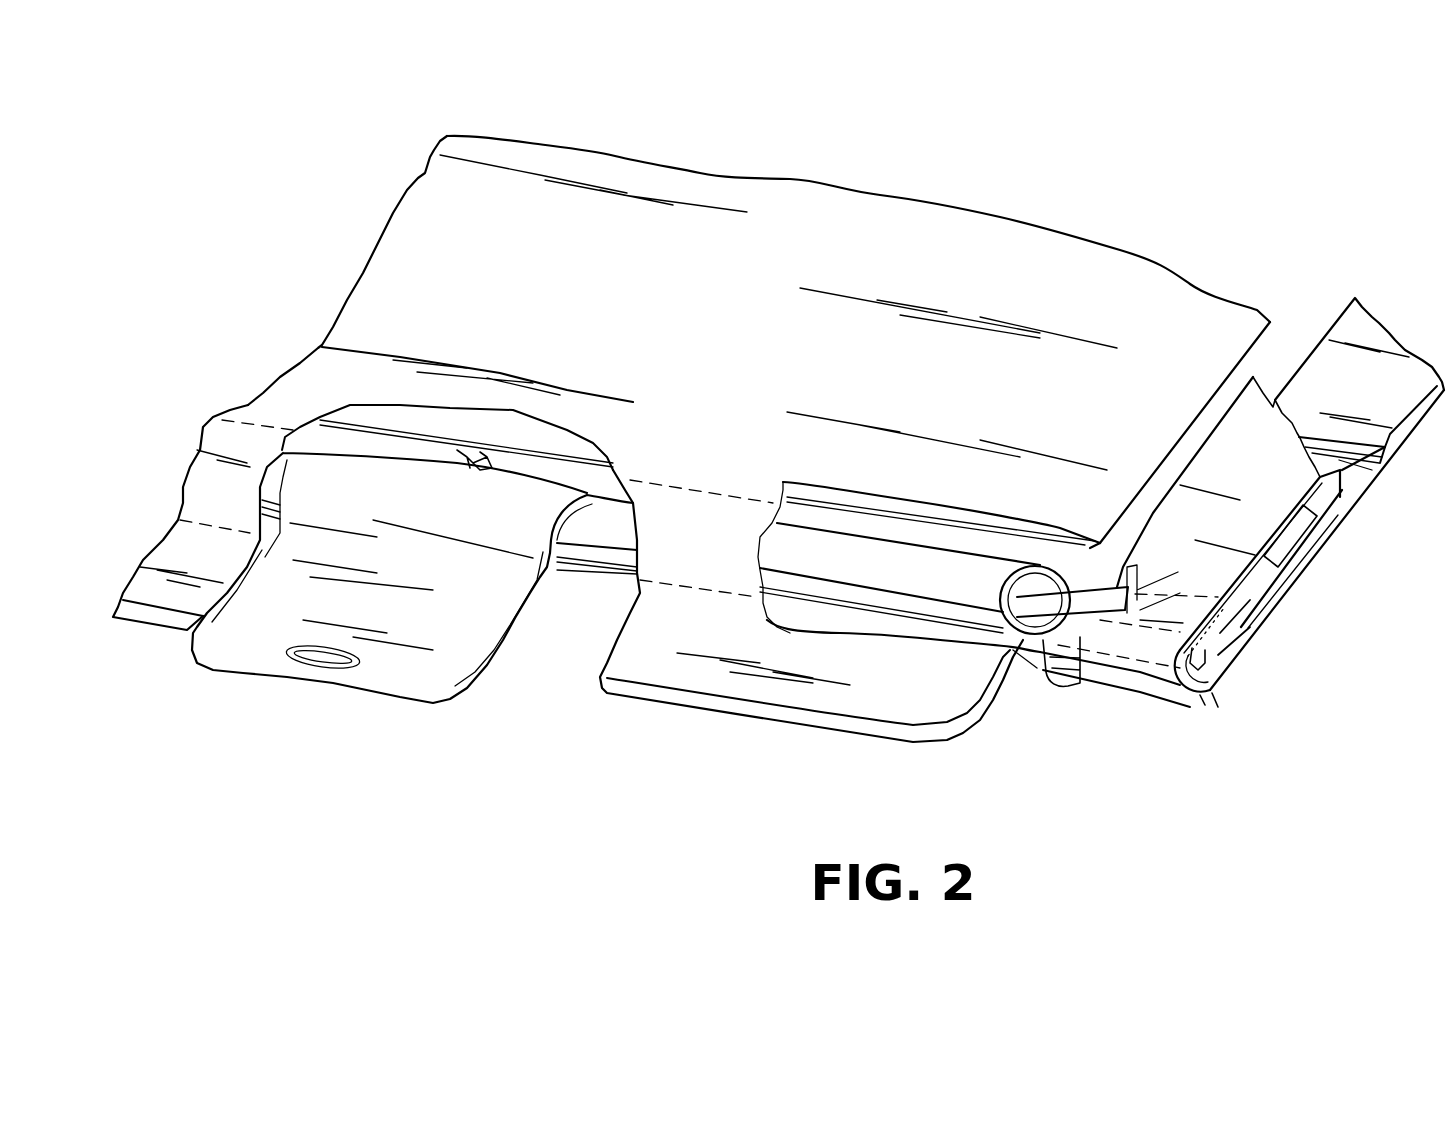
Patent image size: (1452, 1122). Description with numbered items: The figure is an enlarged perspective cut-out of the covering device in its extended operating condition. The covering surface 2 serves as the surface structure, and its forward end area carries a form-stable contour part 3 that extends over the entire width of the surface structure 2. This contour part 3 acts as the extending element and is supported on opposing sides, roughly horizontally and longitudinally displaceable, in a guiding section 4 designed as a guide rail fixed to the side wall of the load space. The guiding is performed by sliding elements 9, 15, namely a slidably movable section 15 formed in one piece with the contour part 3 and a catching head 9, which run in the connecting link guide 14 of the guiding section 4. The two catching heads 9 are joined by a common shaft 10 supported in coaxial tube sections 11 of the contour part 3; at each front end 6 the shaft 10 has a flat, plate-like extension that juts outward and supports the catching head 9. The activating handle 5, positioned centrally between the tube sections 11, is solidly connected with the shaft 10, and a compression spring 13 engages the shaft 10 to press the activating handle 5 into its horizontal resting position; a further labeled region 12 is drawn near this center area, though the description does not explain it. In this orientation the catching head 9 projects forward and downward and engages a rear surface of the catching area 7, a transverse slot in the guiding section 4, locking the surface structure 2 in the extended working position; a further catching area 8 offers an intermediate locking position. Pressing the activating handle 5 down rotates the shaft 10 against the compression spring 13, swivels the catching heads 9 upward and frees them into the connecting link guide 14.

The covering surface 2 is at (1080, 255).
The contour part 3 is at (887, 703).
The guiding section 4 is at (1270, 515).
The activating handle 5 is at (440, 673).
The front end 6 is at (1050, 620).
The catching area 7 is at (1233, 653).
The catching area 8 is at (1347, 490).
The catching head 9 is at (1240, 630).
The shaft 10 is at (1027, 630).
The tube section 11 is at (280, 473).
The rib 12 is at (540, 503).
The compression spring 13 is at (467, 460).
The connecting link guide 14 is at (1283, 557).
The slidably movable section 15 is at (1223, 690).